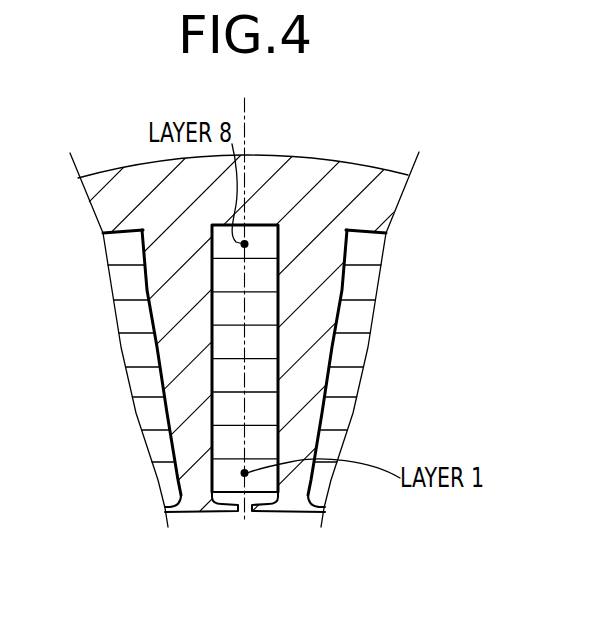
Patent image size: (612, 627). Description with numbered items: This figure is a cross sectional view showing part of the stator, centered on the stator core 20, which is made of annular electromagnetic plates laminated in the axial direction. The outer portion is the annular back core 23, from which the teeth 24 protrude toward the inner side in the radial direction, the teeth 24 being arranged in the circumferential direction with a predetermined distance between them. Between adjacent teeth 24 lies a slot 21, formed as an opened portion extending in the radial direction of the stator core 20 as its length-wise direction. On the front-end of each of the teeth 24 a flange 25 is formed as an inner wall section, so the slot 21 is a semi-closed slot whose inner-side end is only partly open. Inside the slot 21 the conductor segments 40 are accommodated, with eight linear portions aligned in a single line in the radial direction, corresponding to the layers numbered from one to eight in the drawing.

The stator core 20 is at (350, 161).
The slot 21 is at (213, 384).
The back core 23 is at (277, 161).
The teeth 24 is at (183, 306).
The flange 25 is at (256, 511).
The conductor segments 40 is at (262, 423).